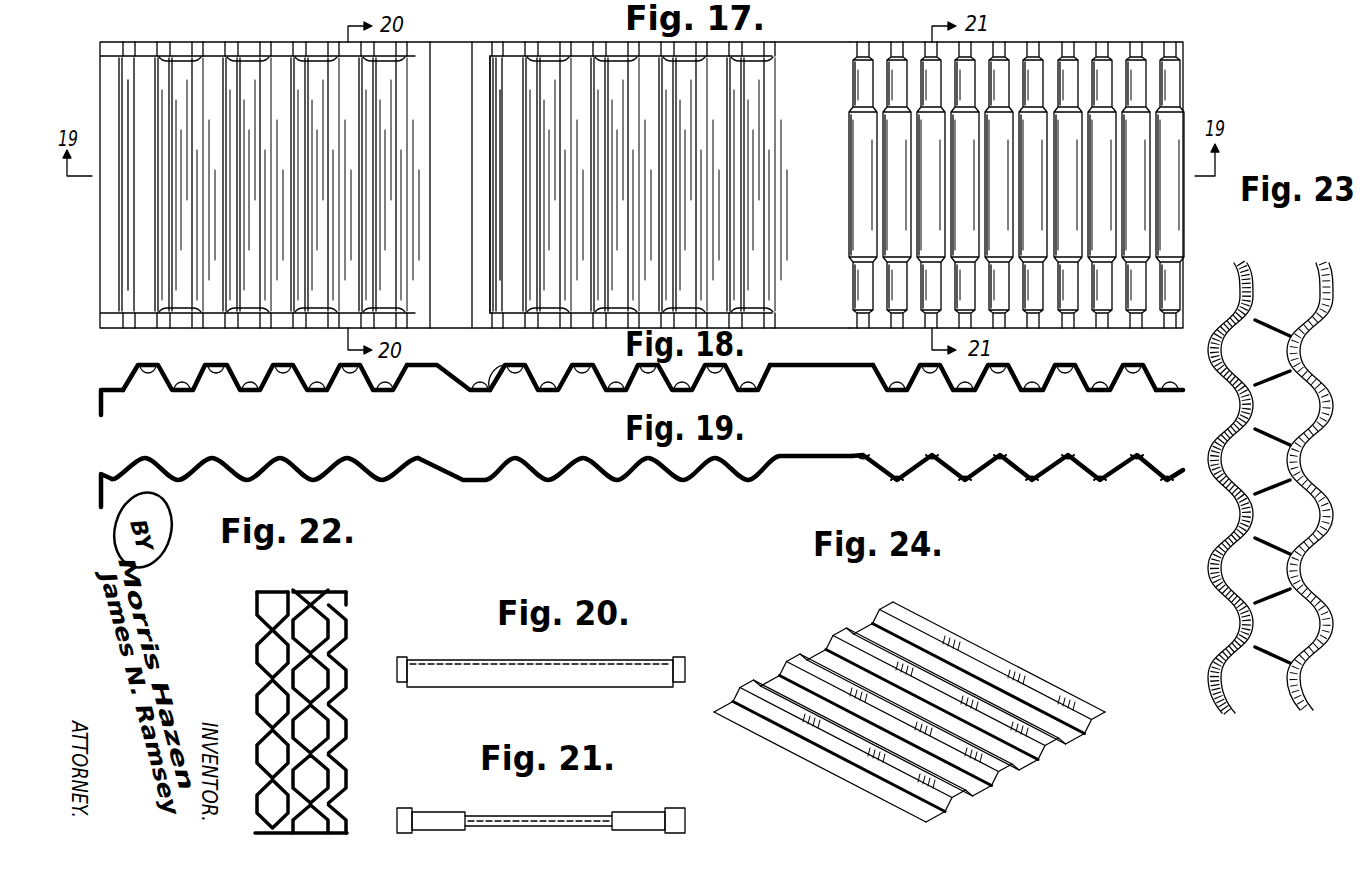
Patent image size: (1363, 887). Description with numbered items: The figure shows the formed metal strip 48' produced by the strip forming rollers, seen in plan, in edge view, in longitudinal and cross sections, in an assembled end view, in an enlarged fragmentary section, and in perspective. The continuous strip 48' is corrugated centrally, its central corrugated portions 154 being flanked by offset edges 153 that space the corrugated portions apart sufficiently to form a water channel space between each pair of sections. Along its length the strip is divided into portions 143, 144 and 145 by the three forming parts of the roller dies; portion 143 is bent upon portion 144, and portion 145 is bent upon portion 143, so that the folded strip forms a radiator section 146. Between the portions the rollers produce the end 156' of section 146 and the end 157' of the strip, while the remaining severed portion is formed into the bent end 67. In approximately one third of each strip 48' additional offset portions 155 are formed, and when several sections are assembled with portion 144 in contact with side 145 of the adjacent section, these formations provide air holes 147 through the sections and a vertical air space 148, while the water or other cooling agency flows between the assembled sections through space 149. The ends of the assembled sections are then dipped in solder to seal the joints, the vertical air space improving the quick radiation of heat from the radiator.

In FIG. 18, the strip 48' is at (1133, 355).
In FIG. 20, the strip 48' is at (700, 668).
In FIG. 21, the strip 48' is at (696, 819).
In FIG. 24, the strip 48' is at (1015, 767).
In FIG. 18, the bent end 67 is at (101, 406).
In FIG. 19, the bent end 67 is at (101, 493).
In FIG. 22, the bent end 67 is at (313, 595).
In FIG. 18, the portion 143 is at (909, 375).
In FIG. 22, the portion 143 is at (331, 683).
In FIG. 18, the portion 144 is at (536, 372).
In FIG. 22, the portion 144 is at (262, 760).
In FIG. 18, the portion 145 is at (222, 357).
In FIG. 20, the portion 145 is at (404, 658).
In FIG. 22, the portion 145 is at (346, 636).
In FIG. 22, the radiator section 146 is at (333, 704).
In FIG. 22, the air holes 147 is at (262, 705).
In FIG. 23, the air holes 147 is at (1278, 540).
In FIG. 22, the vertical air space 148 is at (270, 629).
In FIG. 23, the vertical air space 148 is at (1236, 482).
In FIG. 22, the space 149 is at (289, 595).
In FIG. 17, the offset edges 153 is at (494, 316).
In FIG. 18, the offset edges 153 is at (491, 385).
In FIG. 17, the central corrugated portions 154 is at (270, 288).
In FIG. 19, the central corrugated portions 154 is at (303, 462).
In FIG. 20, the central corrugated portions 154 is at (505, 680).
In FIG. 23, the central corrugated portions 154 is at (1215, 685).
In FIG. 17, the offset portions 155 is at (1150, 233).
In FIG. 19, the offset portions 155 is at (1063, 456).
In FIG. 21, the offset portions 155 is at (512, 817).
In FIG. 23, the offset portions 155 is at (1298, 344).
In FIG. 24, the offset portions 155 is at (977, 652).
In FIG. 17, the end 156' is at (811, 203).
In FIG. 19, the end 156' is at (800, 452).
In FIG. 22, the end 156' is at (325, 570).
In FIG. 17, the end 157' is at (451, 185).
In FIG. 18, the end 157' is at (448, 359).
In FIG. 19, the end 157' is at (460, 456).
In FIG. 22, the end 157' is at (310, 844).